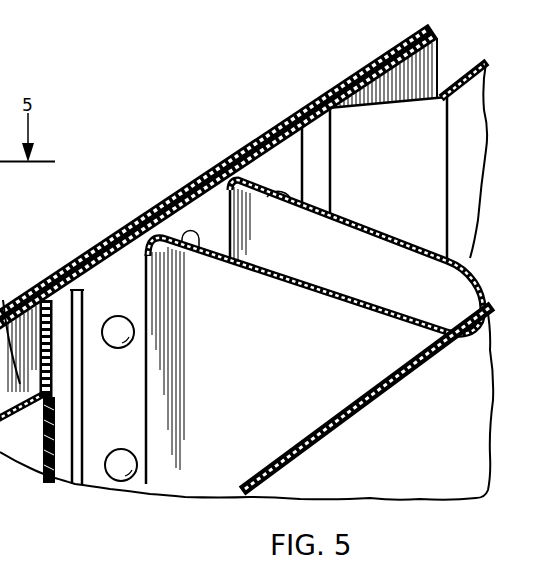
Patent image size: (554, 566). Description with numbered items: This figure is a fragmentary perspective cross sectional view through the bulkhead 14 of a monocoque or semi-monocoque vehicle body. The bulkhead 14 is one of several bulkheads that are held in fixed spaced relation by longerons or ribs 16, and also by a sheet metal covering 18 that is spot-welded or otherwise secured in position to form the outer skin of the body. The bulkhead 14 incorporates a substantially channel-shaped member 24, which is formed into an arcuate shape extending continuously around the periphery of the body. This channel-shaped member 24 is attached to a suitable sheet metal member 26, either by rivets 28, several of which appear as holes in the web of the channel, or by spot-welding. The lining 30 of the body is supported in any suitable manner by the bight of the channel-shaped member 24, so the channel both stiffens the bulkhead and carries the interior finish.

The bulkhead 14 is at (4, 61).
The longerons or ribs 16 is at (0, 194).
The sheet metal covering 18 is at (253, 141).
The channel-shaped member 24 is at (188, 240).
The sheet metal member 26 is at (303, 115).
The rivets 28 is at (122, 342).
The lining 30 is at (310, 434).